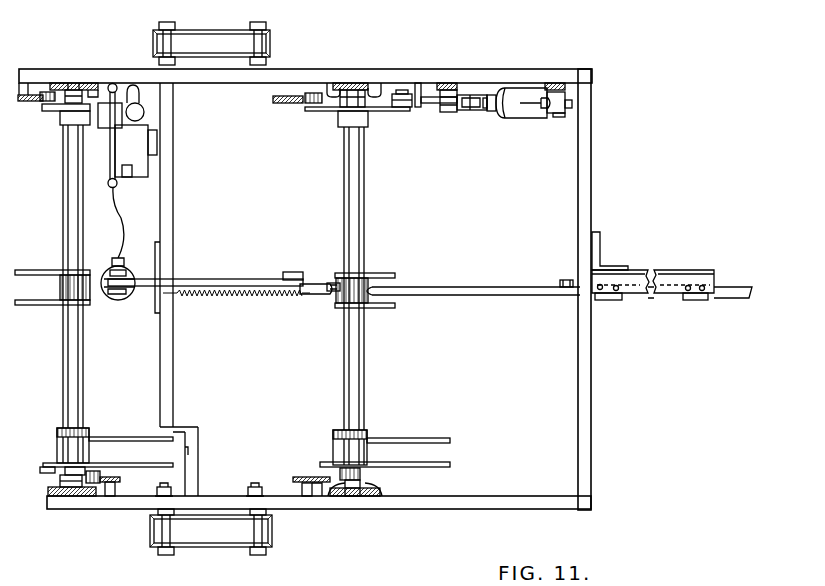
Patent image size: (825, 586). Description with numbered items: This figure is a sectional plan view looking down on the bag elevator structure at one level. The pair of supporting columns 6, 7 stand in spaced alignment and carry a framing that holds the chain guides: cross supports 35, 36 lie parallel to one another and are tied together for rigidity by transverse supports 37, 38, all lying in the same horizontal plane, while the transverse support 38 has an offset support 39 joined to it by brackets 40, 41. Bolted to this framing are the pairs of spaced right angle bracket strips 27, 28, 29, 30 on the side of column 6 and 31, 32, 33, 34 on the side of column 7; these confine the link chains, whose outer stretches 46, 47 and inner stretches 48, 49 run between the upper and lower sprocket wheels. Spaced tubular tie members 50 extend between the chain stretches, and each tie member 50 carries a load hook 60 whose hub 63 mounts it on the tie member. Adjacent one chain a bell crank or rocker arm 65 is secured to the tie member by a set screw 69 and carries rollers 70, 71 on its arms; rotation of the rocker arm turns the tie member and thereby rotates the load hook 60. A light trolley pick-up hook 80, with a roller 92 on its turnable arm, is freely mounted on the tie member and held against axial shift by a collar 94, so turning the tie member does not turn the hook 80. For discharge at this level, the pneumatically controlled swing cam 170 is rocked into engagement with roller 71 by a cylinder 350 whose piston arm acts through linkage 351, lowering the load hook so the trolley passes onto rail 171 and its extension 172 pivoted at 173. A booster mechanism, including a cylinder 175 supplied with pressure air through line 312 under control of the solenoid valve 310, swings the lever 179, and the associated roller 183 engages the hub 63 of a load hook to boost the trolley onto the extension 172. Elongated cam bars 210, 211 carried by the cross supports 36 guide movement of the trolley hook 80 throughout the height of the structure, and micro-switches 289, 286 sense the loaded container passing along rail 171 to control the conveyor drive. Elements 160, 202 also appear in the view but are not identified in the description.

The supporting column 6 is at (217, 33).
The supporting column 7 is at (213, 546).
The right angle bracket strip 27 is at (92, 83).
The right angle bracket strip 28 is at (60, 83).
The right angle bracket strip 29 is at (331, 83).
The right angle bracket strip 30 is at (382, 85).
The right angle bracket strip 31 is at (375, 496).
The right angle bracket strip 32 is at (318, 496).
The right angle bracket strip 33 is at (87, 496).
The right angle bracket strip 34 is at (60, 479).
The cross support 35 is at (483, 83).
The cross support 36 is at (482, 505).
The transverse support 37 is at (587, 362).
The transverse support 38 is at (174, 355).
The offset support 39 is at (199, 440).
The bracket 40 is at (181, 428).
The bracket 41 is at (178, 493).
The outer chain stretch 46 is at (71, 487).
The outer chain stretch 47 is at (72, 88).
The inner chain stretch 48 is at (351, 496).
The inner chain stretch 49 is at (361, 85).
The tubular tie member 50 is at (70, 223).
The load hook 60 is at (395, 276).
The hub 63 is at (344, 300).
The bell crank 65 is at (58, 112).
The set screw 69 is at (38, 276).
The roller 70 is at (44, 92).
The roller 71 is at (406, 108).
The light trolley pick-up hook 80 is at (95, 437).
The roller 92 is at (101, 475).
The collar 94 is at (58, 430).
The mounting bar 160 is at (279, 104).
The swing cam 170 is at (424, 108).
The rail 171 is at (738, 286).
The rail extension 172 is at (460, 296).
The pivot 173 is at (563, 280).
The cylinder 175 is at (115, 301).
The lever 179 is at (205, 278).
The roller 183 is at (332, 283).
The mounting bar 202 is at (27, 101).
The cam bar 210 is at (298, 477).
The cam bar 211 is at (120, 480).
The micro-switch 286 is at (694, 302).
The micro-switch 289 is at (617, 302).
The solenoid valve 310 is at (145, 112).
The air line 312 is at (122, 215).
The cylinder 350 is at (521, 118).
The linkage 351 is at (452, 112).